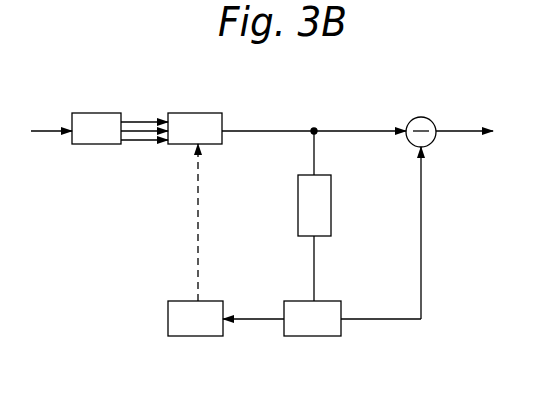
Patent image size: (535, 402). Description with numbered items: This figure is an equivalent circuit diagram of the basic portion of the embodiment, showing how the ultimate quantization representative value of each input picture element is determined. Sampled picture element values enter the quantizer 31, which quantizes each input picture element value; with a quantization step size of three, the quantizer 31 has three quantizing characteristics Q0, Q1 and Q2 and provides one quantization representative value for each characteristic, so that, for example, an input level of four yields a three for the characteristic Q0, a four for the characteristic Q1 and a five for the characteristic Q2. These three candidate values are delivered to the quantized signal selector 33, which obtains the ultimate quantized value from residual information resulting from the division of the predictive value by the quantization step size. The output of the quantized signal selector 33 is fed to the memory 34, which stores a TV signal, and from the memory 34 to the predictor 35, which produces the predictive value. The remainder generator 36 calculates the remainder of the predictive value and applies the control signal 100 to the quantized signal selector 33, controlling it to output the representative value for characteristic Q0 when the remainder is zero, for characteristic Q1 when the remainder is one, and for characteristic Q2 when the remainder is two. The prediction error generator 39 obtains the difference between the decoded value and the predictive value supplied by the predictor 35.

The quantizer 31 is at (98, 113).
The quantized signal selector 33 is at (192, 113).
The memory 34 is at (332, 200).
The predictor 35 is at (312, 336).
The remainder generator 36 is at (188, 336).
The prediction error generator 39 is at (420, 117).
The control signal 100 is at (198, 223).
The quantization characteristic Q0 is at (140, 121).
The quantization characteristic Q1 is at (130, 132).
The quantization characteristic Q2 is at (148, 142).